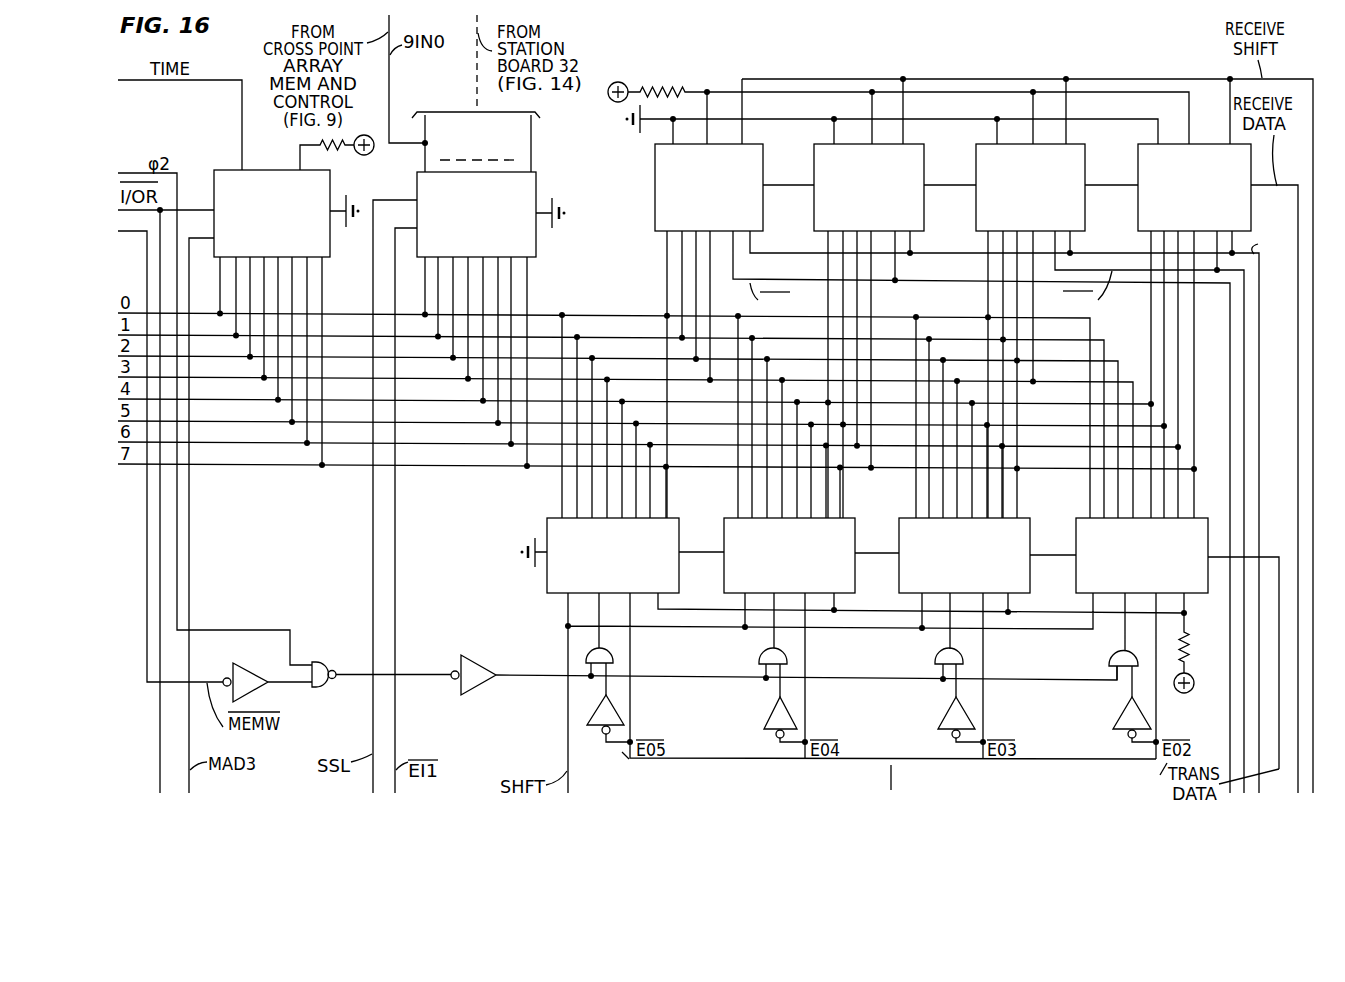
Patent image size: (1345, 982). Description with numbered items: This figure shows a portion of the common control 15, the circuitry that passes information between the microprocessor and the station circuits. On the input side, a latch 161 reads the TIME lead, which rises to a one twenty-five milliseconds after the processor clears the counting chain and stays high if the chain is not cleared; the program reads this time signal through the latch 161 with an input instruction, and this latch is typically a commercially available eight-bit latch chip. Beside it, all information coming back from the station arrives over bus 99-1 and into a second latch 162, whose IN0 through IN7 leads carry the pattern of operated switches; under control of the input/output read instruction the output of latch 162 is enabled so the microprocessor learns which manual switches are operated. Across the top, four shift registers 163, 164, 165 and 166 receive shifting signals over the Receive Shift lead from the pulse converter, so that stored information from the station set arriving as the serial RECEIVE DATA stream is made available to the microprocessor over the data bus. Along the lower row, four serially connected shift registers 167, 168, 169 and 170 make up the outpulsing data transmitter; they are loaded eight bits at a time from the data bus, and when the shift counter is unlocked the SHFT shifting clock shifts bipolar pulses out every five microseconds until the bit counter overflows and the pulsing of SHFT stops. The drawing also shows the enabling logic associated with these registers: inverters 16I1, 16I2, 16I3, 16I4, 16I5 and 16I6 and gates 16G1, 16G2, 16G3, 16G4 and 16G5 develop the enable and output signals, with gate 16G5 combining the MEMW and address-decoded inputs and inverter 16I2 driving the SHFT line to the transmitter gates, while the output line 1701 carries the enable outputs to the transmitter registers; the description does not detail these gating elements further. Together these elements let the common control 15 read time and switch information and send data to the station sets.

The latch 161 is at (230, 169).
The latch 162 is at (538, 180).
The shift register 163 is at (654, 162).
The shift register 164 is at (814, 160).
The shift register 165 is at (975, 160).
The shift register 166 is at (1137, 160).
The shift register 167 is at (548, 518).
The shift register 168 is at (725, 518).
The shift register 169 is at (901, 518).
The shift register 170 is at (1077, 518).
The inverter 16I1 is at (254, 663).
The inverter 16I2 is at (490, 646).
The inverter 16I3 is at (616, 710).
The inverter 16I4 is at (766, 712).
The inverter 16I5 is at (946, 712).
The inverter 16I6 is at (1122, 712).
The AND gate 16G1 is at (586, 656).
The AND gate 16G2 is at (759, 657).
The AND gate 16G3 is at (935, 657).
The AND gate 16G4 is at (1109, 659).
The NAND gate 16G5 is at (328, 650).
The output enable line 1701 is at (893, 778).
The bus 99-1 is at (475, 90).
The common control 15 is at (959, 412).